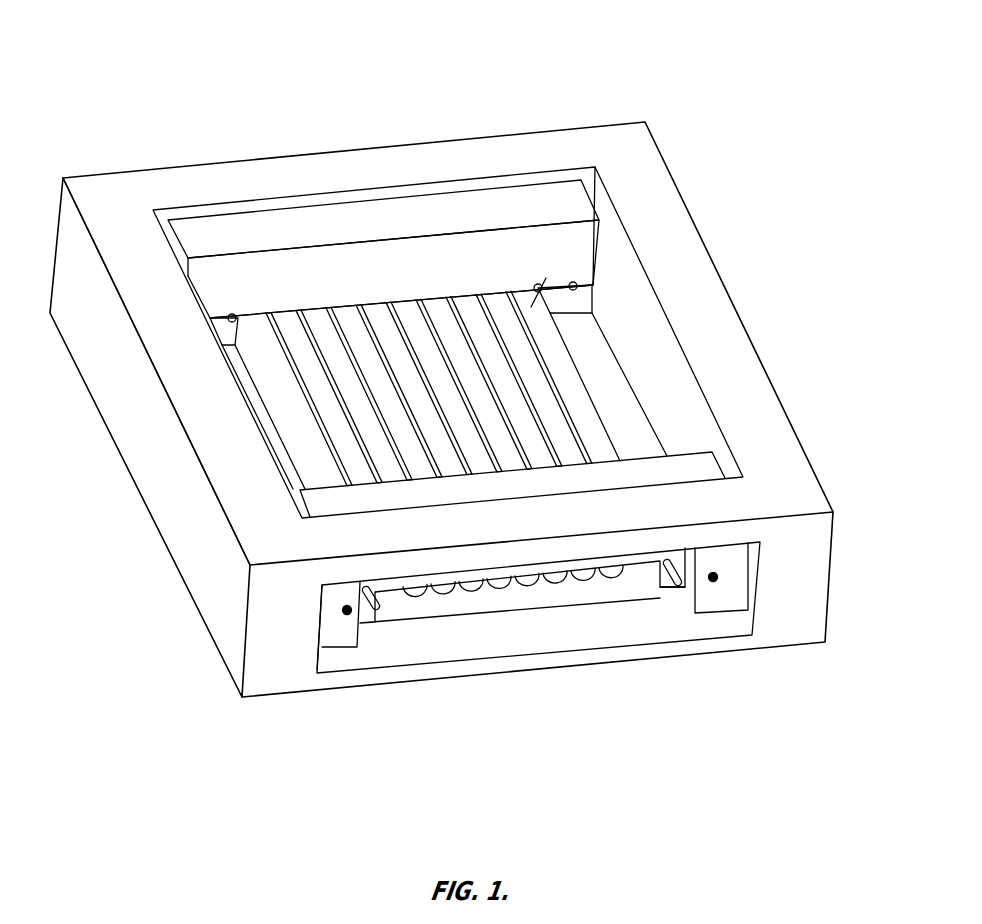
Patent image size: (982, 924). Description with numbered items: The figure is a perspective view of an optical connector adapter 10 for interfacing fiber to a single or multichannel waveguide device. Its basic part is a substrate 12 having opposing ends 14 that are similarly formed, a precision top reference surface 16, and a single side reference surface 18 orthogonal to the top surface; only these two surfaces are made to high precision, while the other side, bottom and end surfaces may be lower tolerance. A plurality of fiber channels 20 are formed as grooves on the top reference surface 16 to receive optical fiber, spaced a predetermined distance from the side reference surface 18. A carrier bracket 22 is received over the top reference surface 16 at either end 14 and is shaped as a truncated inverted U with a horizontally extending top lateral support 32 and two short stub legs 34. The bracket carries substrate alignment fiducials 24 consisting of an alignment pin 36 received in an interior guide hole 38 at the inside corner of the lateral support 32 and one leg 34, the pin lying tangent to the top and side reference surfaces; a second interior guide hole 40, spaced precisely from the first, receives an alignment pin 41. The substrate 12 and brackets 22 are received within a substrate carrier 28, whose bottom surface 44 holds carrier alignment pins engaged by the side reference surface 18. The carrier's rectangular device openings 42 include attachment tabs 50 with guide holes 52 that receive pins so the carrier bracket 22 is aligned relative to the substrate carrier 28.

The electrical connector 10 is at (479, 69).
The substrate 12 is at (269, 343).
The opposing ends 14 is at (392, 607).
The top reference surface 16 is at (541, 289).
The side reference surface 18 is at (571, 360).
The fiber channels 20 is at (390, 302).
The carrier bracket 22 is at (367, 220).
The substrate alignment fiducials 24 is at (544, 279).
The substrate carrier 28 is at (131, 456).
The top lateral support 32 is at (356, 272).
The stub legs 34 is at (557, 312).
The alignment pin 36 is at (678, 562).
The interior guide hole 38 is at (541, 286).
The interior guide hole 40 is at (228, 318).
The alignment pin 41 is at (350, 596).
The device openings 42 is at (497, 633).
The bottom surface 44 is at (605, 409).
The attachment tabs 50 is at (328, 640).
The guide holes 52 is at (717, 577).